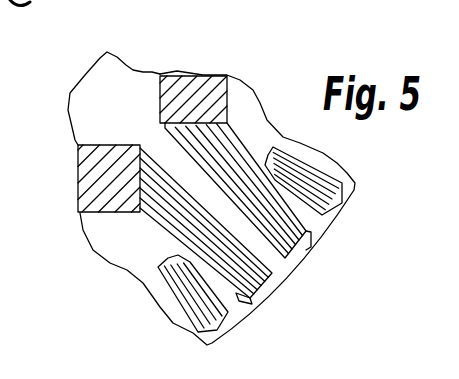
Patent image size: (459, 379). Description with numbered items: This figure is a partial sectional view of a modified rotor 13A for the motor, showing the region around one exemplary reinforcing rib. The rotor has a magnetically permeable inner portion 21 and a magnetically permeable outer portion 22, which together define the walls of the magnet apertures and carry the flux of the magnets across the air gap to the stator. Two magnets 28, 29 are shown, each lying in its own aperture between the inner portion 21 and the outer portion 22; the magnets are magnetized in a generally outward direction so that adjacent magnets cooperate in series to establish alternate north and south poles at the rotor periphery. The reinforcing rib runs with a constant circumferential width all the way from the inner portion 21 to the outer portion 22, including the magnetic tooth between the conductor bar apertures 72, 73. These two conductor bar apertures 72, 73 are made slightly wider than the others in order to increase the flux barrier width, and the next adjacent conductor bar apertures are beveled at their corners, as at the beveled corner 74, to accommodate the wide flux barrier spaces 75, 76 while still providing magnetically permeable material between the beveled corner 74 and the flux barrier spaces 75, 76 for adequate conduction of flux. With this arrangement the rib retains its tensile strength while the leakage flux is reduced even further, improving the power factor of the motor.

The sheave body 13A is at (120, 70).
The inner portion 21 is at (132, 115).
The outer portion 22 is at (260, 112).
The magnet 28 is at (186, 76).
The magnet 29 is at (88, 170).
The conductor bar aperture 72 is at (309, 250).
The conductor bar aperture 73 is at (254, 294).
The beveled corner 74 is at (271, 151).
The flux barrier space 75 is at (232, 136).
The flux barrier space 76 is at (158, 212).